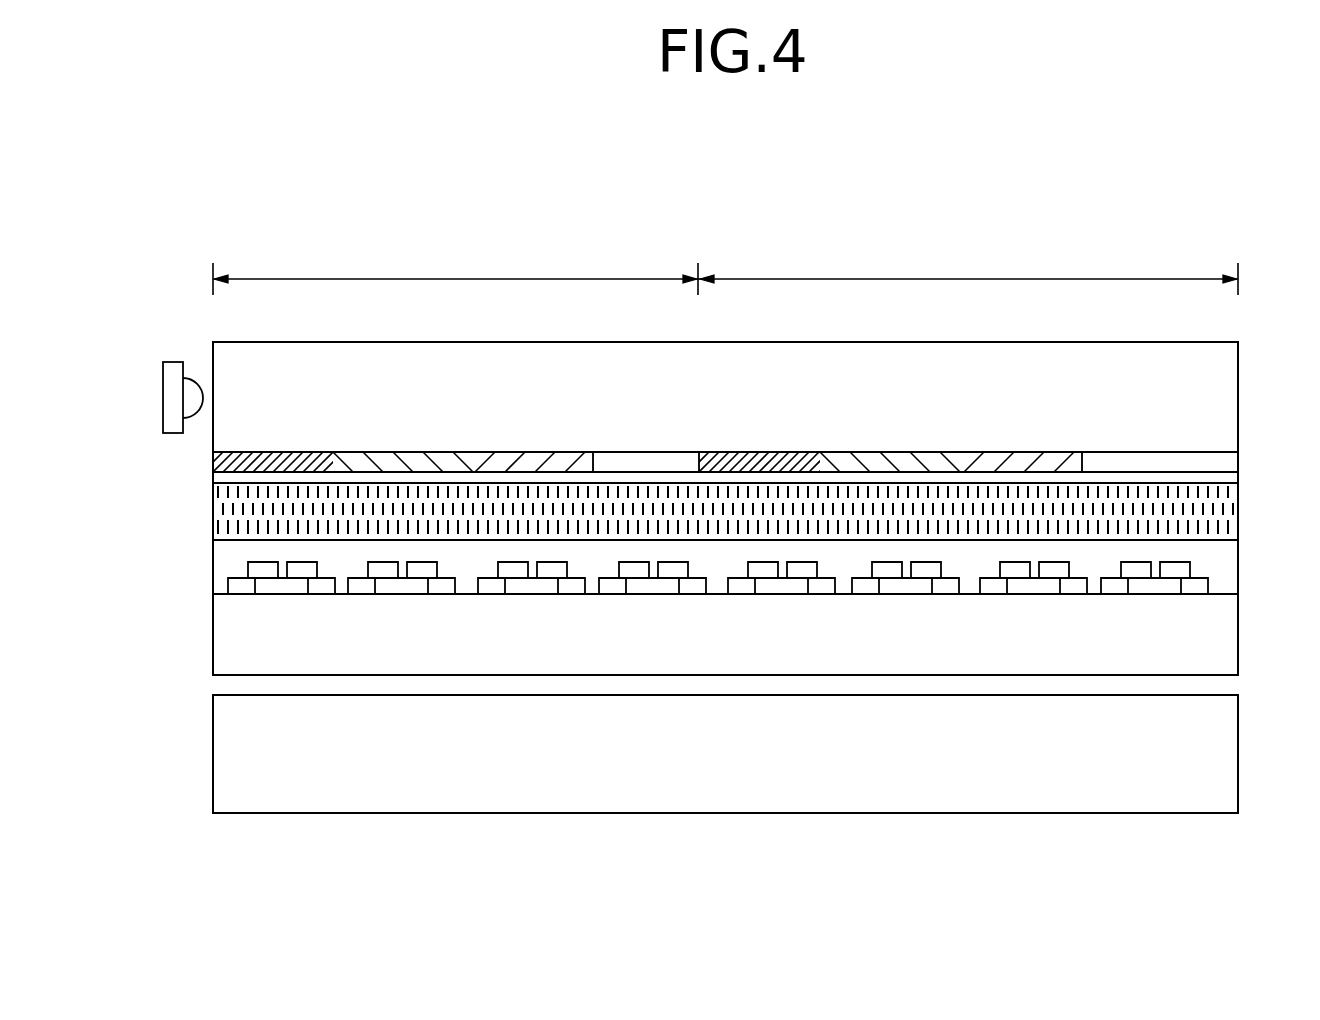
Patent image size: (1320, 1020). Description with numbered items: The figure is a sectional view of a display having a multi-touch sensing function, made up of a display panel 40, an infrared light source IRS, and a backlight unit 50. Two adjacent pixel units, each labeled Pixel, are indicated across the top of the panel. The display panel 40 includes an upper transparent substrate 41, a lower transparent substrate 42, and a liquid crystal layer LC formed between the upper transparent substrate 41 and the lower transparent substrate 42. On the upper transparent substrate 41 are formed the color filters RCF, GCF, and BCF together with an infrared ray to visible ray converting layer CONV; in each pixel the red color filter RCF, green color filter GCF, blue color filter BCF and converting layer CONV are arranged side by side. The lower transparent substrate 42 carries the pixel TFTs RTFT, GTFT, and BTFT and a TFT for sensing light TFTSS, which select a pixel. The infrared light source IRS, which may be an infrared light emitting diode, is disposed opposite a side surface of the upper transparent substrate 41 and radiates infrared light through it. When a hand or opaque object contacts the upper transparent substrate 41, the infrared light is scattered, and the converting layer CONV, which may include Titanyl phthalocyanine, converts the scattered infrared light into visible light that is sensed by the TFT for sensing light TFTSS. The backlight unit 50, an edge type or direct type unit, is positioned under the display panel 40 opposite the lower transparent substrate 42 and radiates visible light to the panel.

The display panel 40 is at (147, 357).
The upper transparent substrate 41 is at (1228, 443).
The lower transparent substrate 42 is at (1232, 632).
The backlight unit 50 is at (214, 756).
The liquid crystal layer LC is at (1232, 515).
The infrared light source IRS is at (169, 362).
The red color filter RCF is at (753, 452).
The green color filter GCF is at (893, 452).
The blue color filter BCF is at (1016, 452).
The infrared ray to visible ray converting layer CONV is at (1146, 452).
The pixel TFT RTFT is at (531, 597).
The pixel TFT GTFT is at (653, 597).
The pixel TFT BTFT is at (782, 597).
The TFT for sensing light TFTSS is at (903, 597).
The pixel Pixel is at (725, 265).